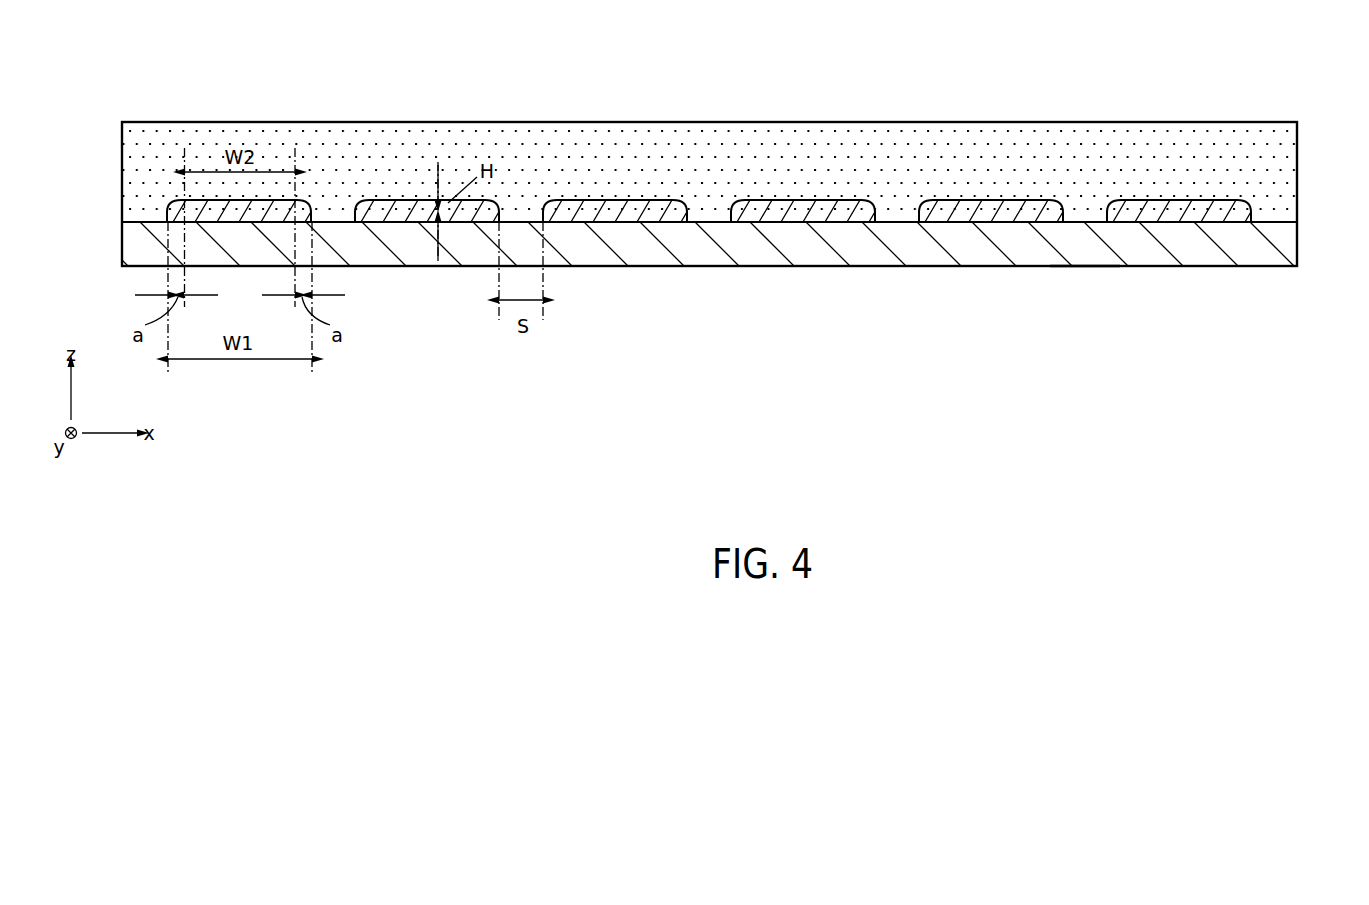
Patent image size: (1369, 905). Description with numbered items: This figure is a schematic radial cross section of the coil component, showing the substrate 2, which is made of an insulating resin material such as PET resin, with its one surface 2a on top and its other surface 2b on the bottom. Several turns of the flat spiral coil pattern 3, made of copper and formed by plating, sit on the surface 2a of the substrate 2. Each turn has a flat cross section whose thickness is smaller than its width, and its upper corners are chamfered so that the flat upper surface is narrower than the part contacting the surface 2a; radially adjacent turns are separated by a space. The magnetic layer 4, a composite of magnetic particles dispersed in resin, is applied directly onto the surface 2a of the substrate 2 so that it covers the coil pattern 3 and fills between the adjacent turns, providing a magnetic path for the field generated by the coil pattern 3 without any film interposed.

The substrate 2 is at (1273, 250).
The one surface of the substrate 2a is at (1078, 222).
The other surface of the substrate 2b is at (1085, 266).
The coil pattern 3 is at (1240, 210).
The magnetic layer 4 is at (1273, 152).